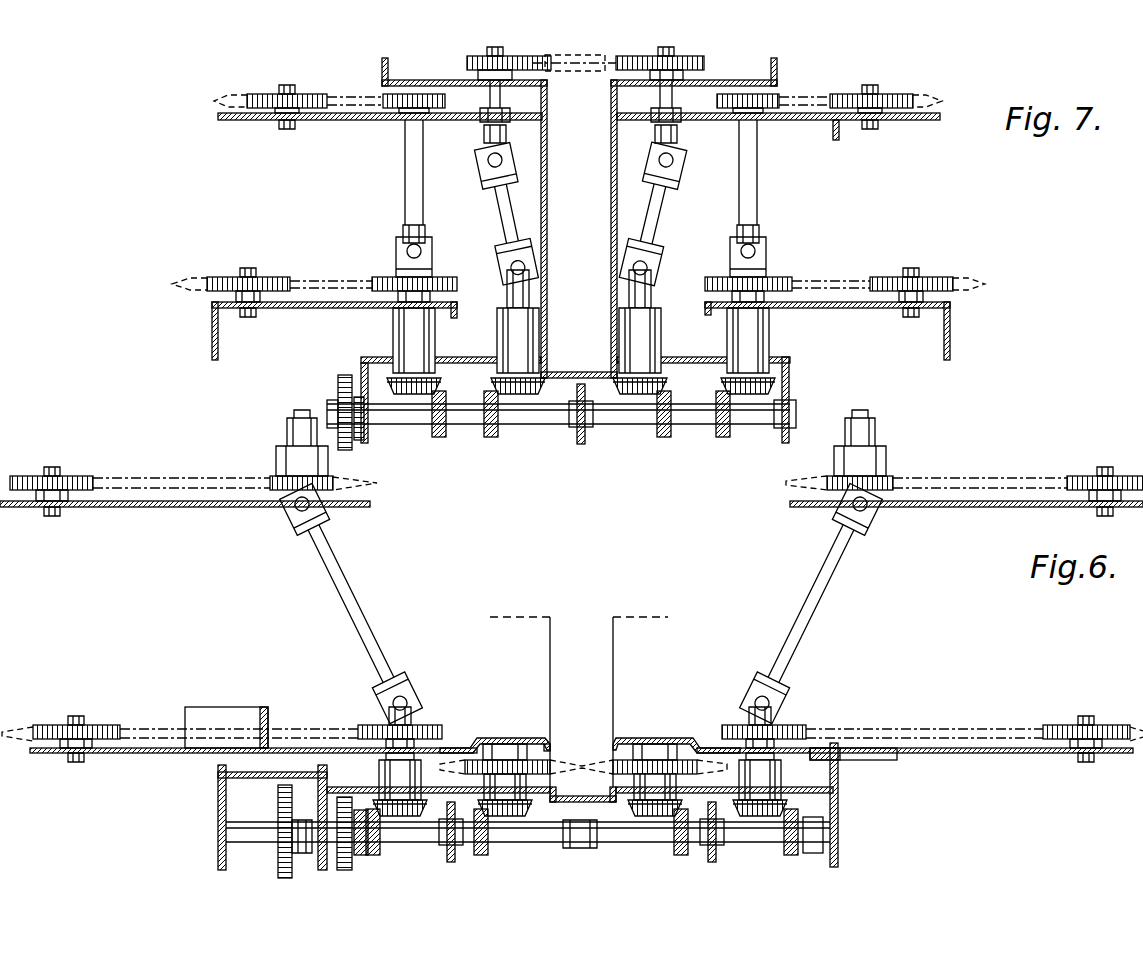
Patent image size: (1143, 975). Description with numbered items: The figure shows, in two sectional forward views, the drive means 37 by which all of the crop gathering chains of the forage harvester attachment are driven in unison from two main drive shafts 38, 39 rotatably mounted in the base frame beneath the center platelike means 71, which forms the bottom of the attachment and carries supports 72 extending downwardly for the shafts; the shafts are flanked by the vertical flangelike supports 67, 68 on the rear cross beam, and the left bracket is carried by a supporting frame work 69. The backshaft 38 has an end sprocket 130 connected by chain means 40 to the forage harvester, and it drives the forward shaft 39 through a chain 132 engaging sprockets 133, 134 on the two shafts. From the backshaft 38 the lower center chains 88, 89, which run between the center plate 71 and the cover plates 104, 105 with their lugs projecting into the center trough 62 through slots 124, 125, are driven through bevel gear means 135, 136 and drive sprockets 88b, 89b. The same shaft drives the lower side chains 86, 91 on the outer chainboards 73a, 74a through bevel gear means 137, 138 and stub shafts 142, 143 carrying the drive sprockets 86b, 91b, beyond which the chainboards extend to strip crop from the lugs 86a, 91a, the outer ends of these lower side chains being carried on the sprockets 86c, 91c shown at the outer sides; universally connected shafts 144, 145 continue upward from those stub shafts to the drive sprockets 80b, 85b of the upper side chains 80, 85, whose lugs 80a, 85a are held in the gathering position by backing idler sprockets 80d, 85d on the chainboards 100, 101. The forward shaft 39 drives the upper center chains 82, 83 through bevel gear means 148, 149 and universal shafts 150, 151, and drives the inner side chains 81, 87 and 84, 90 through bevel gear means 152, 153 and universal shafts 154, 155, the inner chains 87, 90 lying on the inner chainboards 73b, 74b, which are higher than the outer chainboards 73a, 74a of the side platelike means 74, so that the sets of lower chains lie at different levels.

In FIG. 7, the drive means 37 is at (216, 191).
In FIG. 6, the drive means 37 is at (236, 599).
In FIG. 6, the backshaft 38 is at (634, 845).
In FIG. 7, the forward shaft 39 is at (556, 425).
In FIG. 6, the chain means 40 is at (278, 875).
In FIG. 7, the center trough 62 is at (579, 218).
In FIG. 6, the center trough 62 is at (614, 645).
In FIG. 7, the flangelike support 67 is at (786, 445).
In FIG. 6, the flangelike support 67 is at (838, 858).
In FIG. 7, the flangelike support 68 is at (368, 435).
In FIG. 6, the flangelike support 68 is at (322, 870).
In FIG. 6, the supporting frame work 69 is at (218, 818).
In FIG. 7, the center platelike means 71 is at (447, 364).
In FIG. 6, the center platelike means 71 is at (632, 794).
In FIG. 7, the supports 72 is at (588, 445).
In FIG. 6, the supports 72 is at (452, 864).
In FIG. 6, the outer chainboard 73a is at (972, 754).
In FIG. 7, the inner chainboard 73b is at (806, 309).
In FIG. 6, the side channeled platelike means 74 is at (104, 769).
In FIG. 6, the outer chainboard 74a is at (117, 754).
In FIG. 7, the inner chainboard 74b is at (306, 309).
In FIG. 6, the upper side chain 80 is at (950, 478).
In FIG. 6, the lugs 80a is at (808, 476).
In FIG. 6, the drive sprocket 80b is at (886, 470).
In FIG. 6, the backing idler sprocket 80d is at (1092, 467).
In FIG. 7, the chain 81 is at (797, 92).
In FIG. 7, the upper center chain 82 is at (608, 54).
In FIG. 7, the upper center chain 83 is at (540, 52).
In FIG. 7, the chain 84 is at (352, 94).
In FIG. 6, the upper side chain 85 is at (150, 478).
In FIG. 6, the lugs 85a is at (20, 476).
In FIG. 6, the drive sprocket 85b is at (333, 492).
In FIG. 6, the backing idler sprocket 85d is at (60, 467).
In FIG. 6, the lower side chain 86 is at (905, 729).
In FIG. 6, the lugs 86a is at (1136, 726).
In FIG. 6, the drive sprocket 86b is at (790, 725).
In FIG. 6, the arm outer gear 86c is at (1067, 724).
In FIG. 7, the inner lower chain 87 is at (803, 280).
In FIG. 6, the center chain 88 is at (613, 735).
In FIG. 6, the drive sprocket 88b is at (660, 745).
In FIG. 6, the center chain 89 is at (549, 730).
In FIG. 6, the drive sprocket 89b is at (500, 745).
In FIG. 7, the inner lower chain 90 is at (300, 278).
In FIG. 6, the lower side chain 91 is at (147, 729).
In FIG. 6, the lugs 91a is at (20, 690).
In FIG. 6, the drive sprocket 91b is at (368, 713).
In FIG. 6, the arm outer gear 91c is at (57, 725).
In FIG. 6, the chainboard 100 is at (985, 507).
In FIG. 6, the chainboard 101 is at (165, 507).
In FIG. 6, the platelike member 104 is at (678, 740).
In FIG. 6, the platelike member 105 is at (523, 738).
In FIG. 6, the slot 124 is at (602, 743).
In FIG. 6, the slot 125 is at (550, 752).
In FIG. 6, the end sprocket 130 is at (278, 812).
In FIG. 7, the chain 132 is at (357, 397).
In FIG. 6, the chain 132 is at (346, 870).
In FIG. 6, the sprocket 133 is at (370, 860).
In FIG. 7, the sprocket 134 is at (338, 402).
In FIG. 6, the bevel gear means 135 is at (683, 862).
In FIG. 6, the bevel gear means 136 is at (488, 850).
In FIG. 6, the bevel gear means 137 is at (795, 860).
In FIG. 6, the bevel gear means 138 is at (381, 846).
In FIG. 6, the stub shaft 142 is at (838, 776).
In FIG. 6, the stub shaft 143 is at (381, 742).
In FIG. 6, the universally connected shaft 144 is at (822, 597).
In FIG. 6, the universally connected shaft 145 is at (350, 594).
In FIG. 7, the bevel gear means 148 is at (664, 437).
In FIG. 7, the bevel gear means 149 is at (492, 437).
In FIG. 7, the universal shaft 150 is at (657, 205).
In FIG. 7, the universal shaft 151 is at (500, 206).
In FIG. 7, the bevel gear means 152 is at (724, 437).
In FIG. 7, the bevel gear means 153 is at (440, 437).
In FIG. 7, the universal shaft 154 is at (757, 200).
In FIG. 7, the universal shaft 155 is at (405, 178).